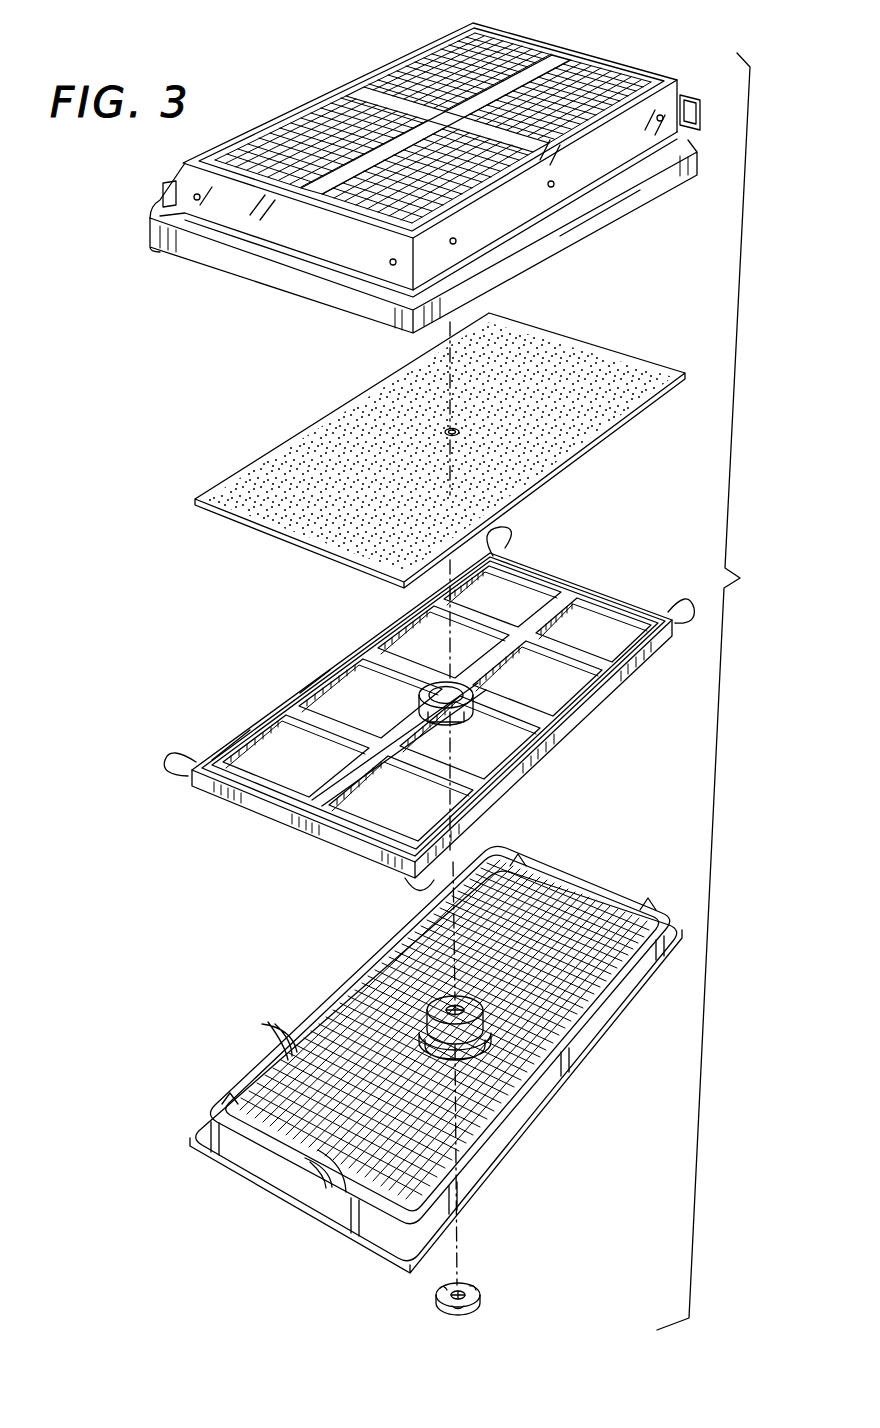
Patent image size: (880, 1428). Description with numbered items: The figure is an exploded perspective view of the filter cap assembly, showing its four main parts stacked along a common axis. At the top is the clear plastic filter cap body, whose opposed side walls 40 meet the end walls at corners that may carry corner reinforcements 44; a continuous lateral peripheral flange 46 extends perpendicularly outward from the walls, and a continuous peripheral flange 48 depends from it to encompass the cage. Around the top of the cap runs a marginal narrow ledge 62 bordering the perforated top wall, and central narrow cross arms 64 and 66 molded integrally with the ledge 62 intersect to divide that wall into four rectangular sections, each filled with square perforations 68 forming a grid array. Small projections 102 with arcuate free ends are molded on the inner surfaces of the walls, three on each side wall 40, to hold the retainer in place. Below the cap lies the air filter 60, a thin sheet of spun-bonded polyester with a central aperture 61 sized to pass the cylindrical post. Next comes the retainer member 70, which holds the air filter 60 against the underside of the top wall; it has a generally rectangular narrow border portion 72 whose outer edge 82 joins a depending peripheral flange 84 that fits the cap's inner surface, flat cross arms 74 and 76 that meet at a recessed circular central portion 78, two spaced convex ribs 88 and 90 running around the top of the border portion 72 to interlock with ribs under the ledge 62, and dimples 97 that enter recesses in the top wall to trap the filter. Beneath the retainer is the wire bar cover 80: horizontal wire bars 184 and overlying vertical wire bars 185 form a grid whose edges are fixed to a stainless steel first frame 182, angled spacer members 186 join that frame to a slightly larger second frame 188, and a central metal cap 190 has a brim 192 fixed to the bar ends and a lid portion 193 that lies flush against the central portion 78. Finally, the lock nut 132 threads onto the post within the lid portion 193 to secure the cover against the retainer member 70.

The side wall 40 is at (442, 175).
The corner reinforcement 44 is at (690, 97).
The lateral peripheral flange 46 is at (263, 255).
The peripheral flange 48 is at (657, 173).
The air filter 60 is at (446, 450).
The aperture 61 is at (454, 428).
The ledge 62 is at (663, 78).
The cross arm 64 is at (380, 103).
The cross arm 66 is at (556, 62).
The perforations 68 is at (333, 103).
The retainer member 70 is at (417, 711).
The border portion 72 is at (612, 590).
The cross arm 74 is at (490, 622).
The cross arm 76 is at (352, 778).
The central portion 78 is at (478, 693).
The wire bar cover 80 is at (422, 1069).
The outer edge 82 is at (520, 730).
The peripheral flange 84 is at (598, 690).
The rib 88 is at (300, 688).
The rib 90 is at (332, 662).
The dimple 97 is at (502, 533).
The projection 102 is at (660, 118).
The lock nut 132 is at (472, 1292).
The first frame 182 is at (628, 985).
The horizontal wire bar 184 is at (333, 1180).
The vertical wire bar 185 is at (264, 1032).
The spacer member 186 is at (658, 905).
The second frame 188 is at (510, 1150).
The cap 190 is at (537, 1070).
The brim 192 is at (465, 1047).
The lid portion 193 is at (472, 1006).